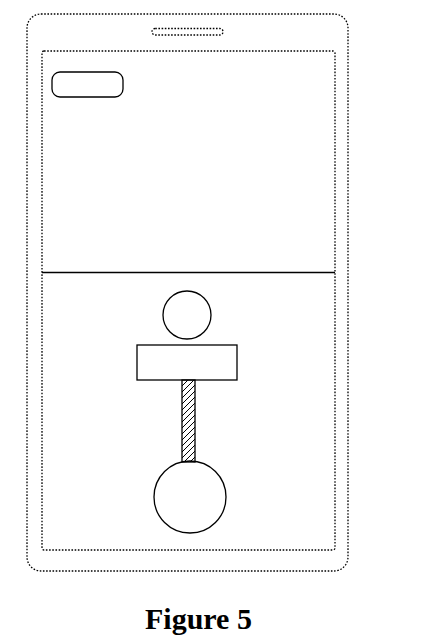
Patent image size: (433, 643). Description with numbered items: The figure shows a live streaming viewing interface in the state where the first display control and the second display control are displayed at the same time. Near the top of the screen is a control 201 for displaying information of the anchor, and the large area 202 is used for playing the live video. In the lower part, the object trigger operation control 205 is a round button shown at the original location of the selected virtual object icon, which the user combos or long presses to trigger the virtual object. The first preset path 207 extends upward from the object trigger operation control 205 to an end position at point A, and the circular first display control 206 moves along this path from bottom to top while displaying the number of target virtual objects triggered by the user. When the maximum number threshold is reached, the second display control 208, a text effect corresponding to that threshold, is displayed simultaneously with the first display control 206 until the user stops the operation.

The control for displaying information of the anchor 201 is at (123, 84).
The area for playing a live video 202 is at (289, 184).
The object trigger operation control 205 is at (154, 495).
The first display control 206 is at (209, 302).
The first preset path 207 is at (182, 404).
The second display control 208 is at (237, 365).